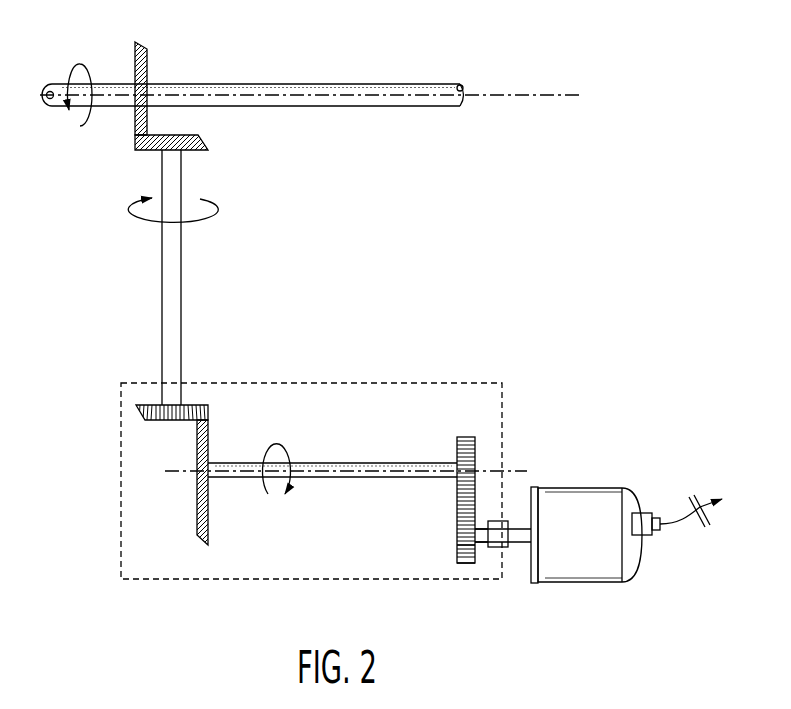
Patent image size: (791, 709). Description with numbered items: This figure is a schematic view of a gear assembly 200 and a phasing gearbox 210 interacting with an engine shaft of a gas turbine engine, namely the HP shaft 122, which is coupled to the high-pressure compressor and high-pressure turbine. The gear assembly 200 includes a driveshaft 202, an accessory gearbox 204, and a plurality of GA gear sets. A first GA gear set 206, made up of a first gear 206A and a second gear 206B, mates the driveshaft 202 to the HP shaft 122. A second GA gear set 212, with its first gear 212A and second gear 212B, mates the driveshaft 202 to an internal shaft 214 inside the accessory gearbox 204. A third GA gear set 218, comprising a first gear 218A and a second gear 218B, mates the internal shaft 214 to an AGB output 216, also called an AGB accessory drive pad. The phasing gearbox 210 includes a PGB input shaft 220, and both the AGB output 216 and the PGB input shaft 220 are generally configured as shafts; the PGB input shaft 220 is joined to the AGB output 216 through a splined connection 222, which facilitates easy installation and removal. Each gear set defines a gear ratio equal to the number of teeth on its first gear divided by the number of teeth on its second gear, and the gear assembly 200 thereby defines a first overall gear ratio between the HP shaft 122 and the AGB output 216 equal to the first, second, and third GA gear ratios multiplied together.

The HP shaft 122 is at (340, 84).
The gear assembly 200 is at (437, 252).
The driveshaft 202 is at (178, 287).
The accessory gearbox 204 is at (442, 383).
The first GA gear set 206 is at (97, 153).
The first gear 206A is at (147, 62).
The second gear 206B is at (205, 141).
The phasing gearbox 210 is at (575, 488).
The second GA gear set 212 is at (230, 414).
The first gear 212A is at (152, 405).
The second gear 212B is at (208, 520).
The internal shaft 214 is at (362, 463).
The AGB output 216 is at (478, 543).
The third GA gear set 218 is at (444, 515).
The first gear 218A is at (477, 447).
The second gear 218B is at (457, 550).
The PGB input shaft 220 is at (518, 548).
The splined connection 222 is at (505, 520).